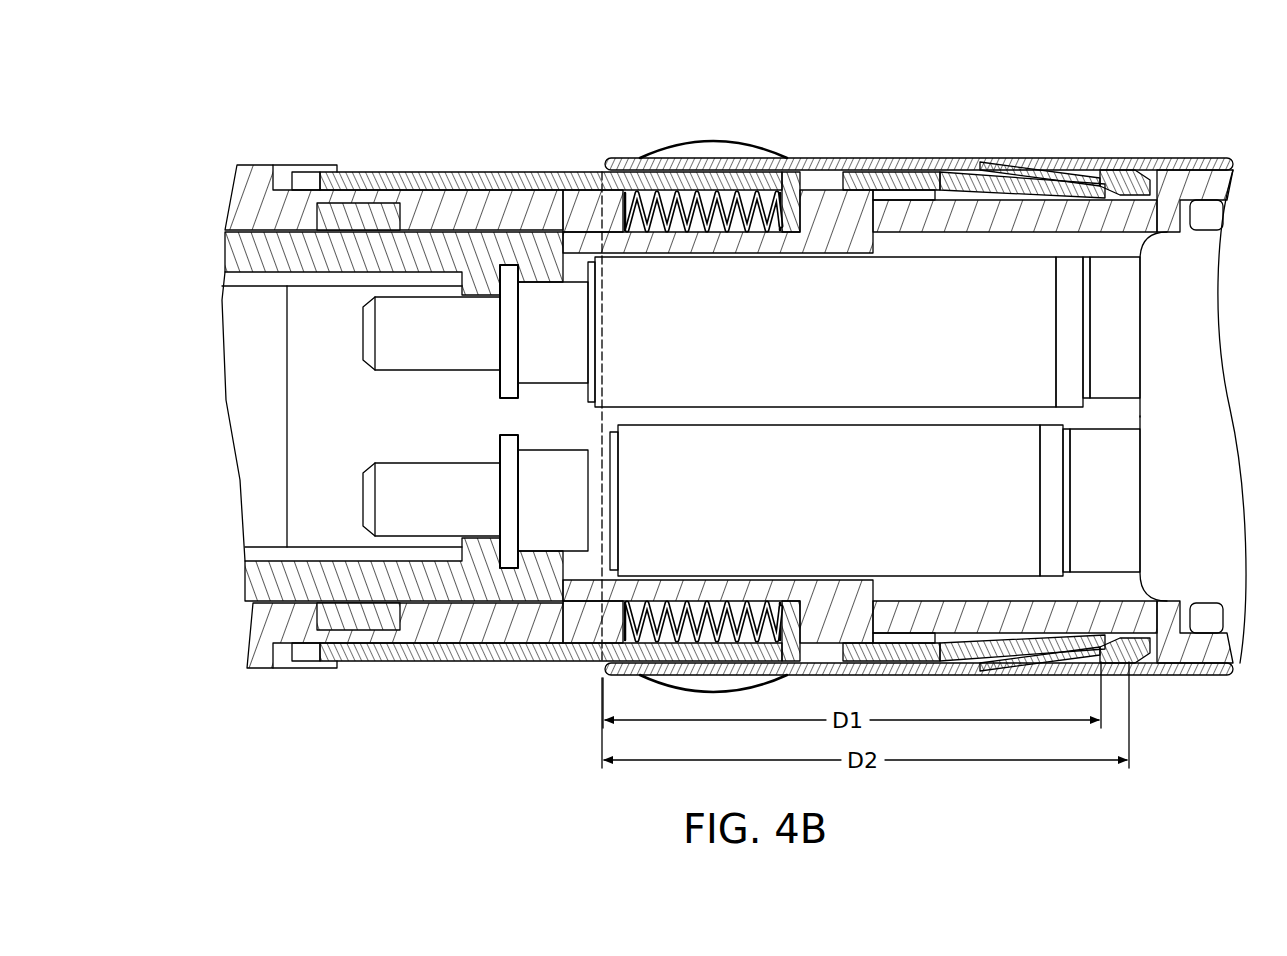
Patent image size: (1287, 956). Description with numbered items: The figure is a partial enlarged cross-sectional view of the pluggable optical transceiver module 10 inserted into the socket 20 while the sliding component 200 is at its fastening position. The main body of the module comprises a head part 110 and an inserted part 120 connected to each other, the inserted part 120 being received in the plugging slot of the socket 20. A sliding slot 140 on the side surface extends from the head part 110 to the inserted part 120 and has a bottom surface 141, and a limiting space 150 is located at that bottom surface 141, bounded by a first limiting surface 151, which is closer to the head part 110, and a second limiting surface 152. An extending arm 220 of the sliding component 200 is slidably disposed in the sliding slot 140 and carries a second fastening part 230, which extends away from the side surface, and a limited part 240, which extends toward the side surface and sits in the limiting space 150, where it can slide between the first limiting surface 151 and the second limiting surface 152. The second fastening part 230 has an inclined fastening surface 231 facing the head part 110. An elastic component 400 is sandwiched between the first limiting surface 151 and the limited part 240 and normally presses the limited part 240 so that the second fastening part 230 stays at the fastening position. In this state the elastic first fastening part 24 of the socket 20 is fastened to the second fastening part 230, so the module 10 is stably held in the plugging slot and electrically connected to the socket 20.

The pluggable optical transceiver module 10 is at (689, 406).
The socket 20 is at (1209, 376).
The first fastening part 24 is at (1058, 170).
The head part 110 is at (462, 623).
The inserted part 120 is at (613, 622).
The sliding slot 140 is at (897, 207).
The bottom surface 141 is at (931, 194).
The limiting space 150 is at (725, 189).
The first limiting surface 151 is at (618, 209).
The second limiting surface 152 is at (813, 208).
The sliding component 200 is at (470, 166).
The extending arm 220 is at (902, 178).
The second fastening part 230 is at (1123, 168).
The fastening surface 231 is at (1093, 184).
The limited part 240 is at (791, 182).
The elastic component 400 is at (672, 147).